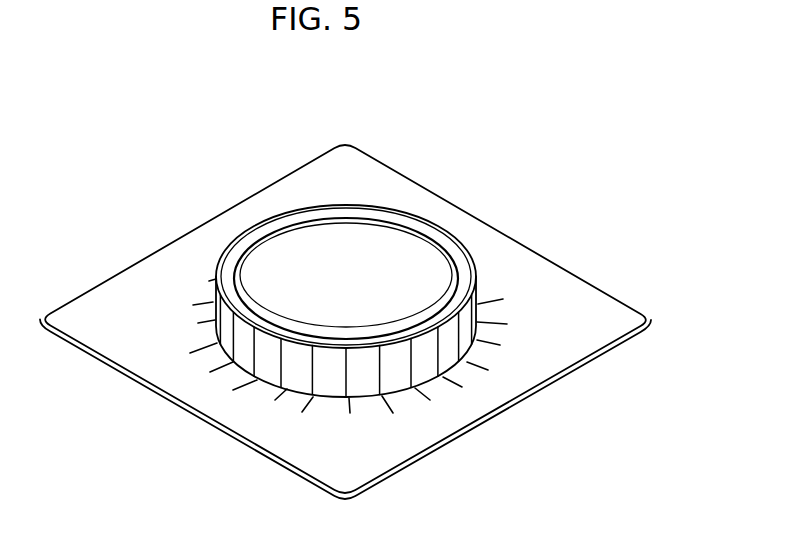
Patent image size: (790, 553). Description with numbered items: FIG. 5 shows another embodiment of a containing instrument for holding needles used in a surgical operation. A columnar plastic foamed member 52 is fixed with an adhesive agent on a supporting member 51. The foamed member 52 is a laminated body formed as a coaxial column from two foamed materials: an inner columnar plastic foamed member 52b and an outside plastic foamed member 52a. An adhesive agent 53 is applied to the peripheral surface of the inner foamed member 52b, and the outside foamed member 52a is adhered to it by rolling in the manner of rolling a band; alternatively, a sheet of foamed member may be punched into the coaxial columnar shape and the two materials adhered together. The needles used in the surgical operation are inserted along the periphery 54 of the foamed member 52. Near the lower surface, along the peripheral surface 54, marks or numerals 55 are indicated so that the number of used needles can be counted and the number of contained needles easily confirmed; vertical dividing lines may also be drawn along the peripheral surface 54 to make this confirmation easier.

The supporting member 51 is at (627, 321).
The columnar plastic foamed member 52 is at (416, 226).
The outside plastic foamed member 52a is at (460, 252).
The inner columnar plastic foamed member 52b is at (340, 233).
The adhesive agent 53 is at (283, 230).
The peripheral surface 54 is at (298, 372).
The marks (numerals) 55 is at (408, 427).